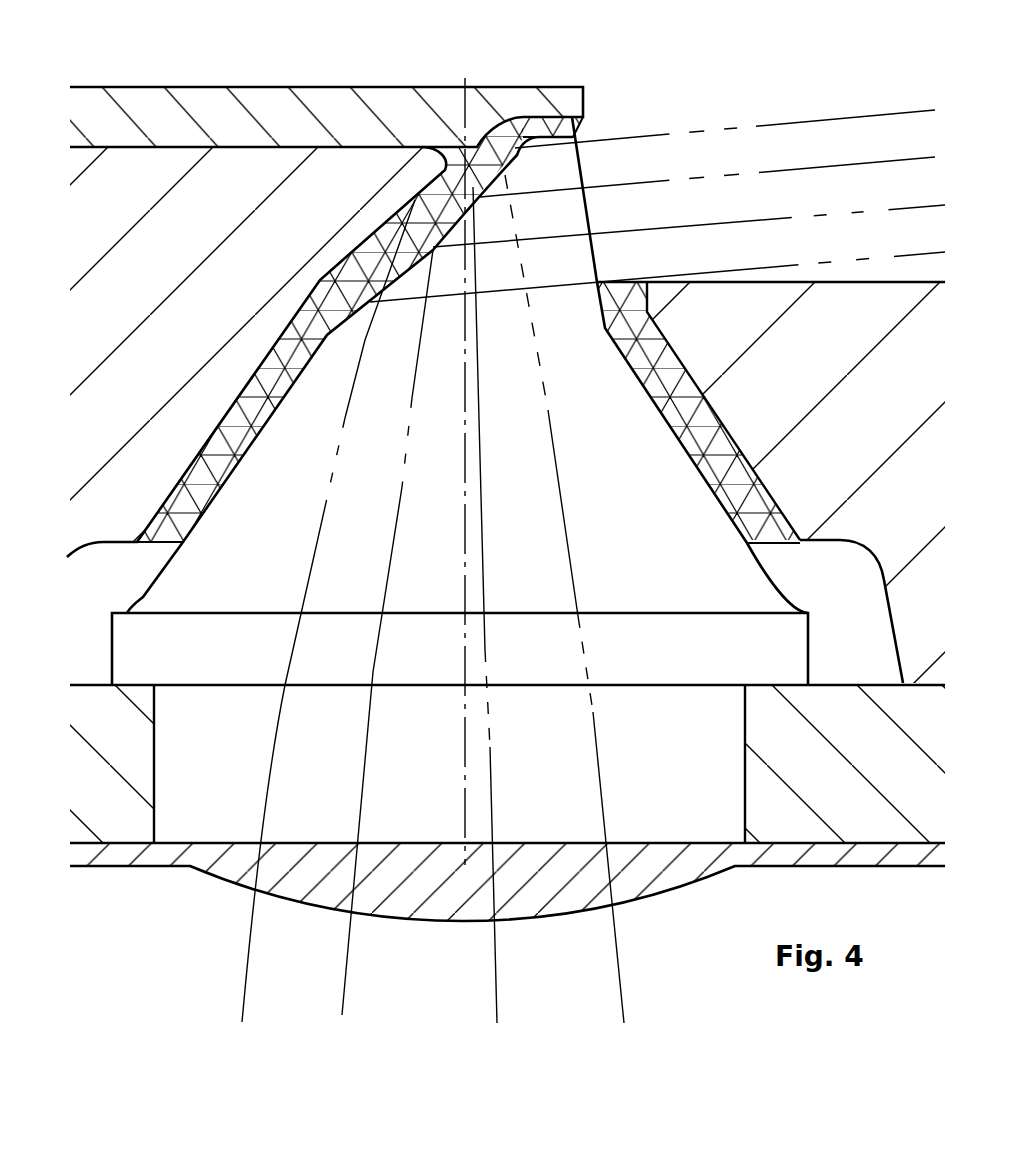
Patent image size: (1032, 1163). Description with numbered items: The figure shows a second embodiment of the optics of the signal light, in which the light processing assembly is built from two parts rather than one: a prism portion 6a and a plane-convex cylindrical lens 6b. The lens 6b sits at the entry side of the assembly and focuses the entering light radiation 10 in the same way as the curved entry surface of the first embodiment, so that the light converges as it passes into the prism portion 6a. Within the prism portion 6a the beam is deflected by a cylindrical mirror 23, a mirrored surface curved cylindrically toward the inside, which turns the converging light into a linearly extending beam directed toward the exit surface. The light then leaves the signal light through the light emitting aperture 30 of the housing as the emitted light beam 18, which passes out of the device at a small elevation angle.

The prism portion 6a is at (255, 580).
The plane-convex cylindrical lens 6b is at (293, 890).
The entering light radiation 10 is at (342, 973).
The light beam 18 is at (648, 137).
The cylindrical mirror 23 is at (431, 240).
The light emitting aperture 30 is at (593, 137).